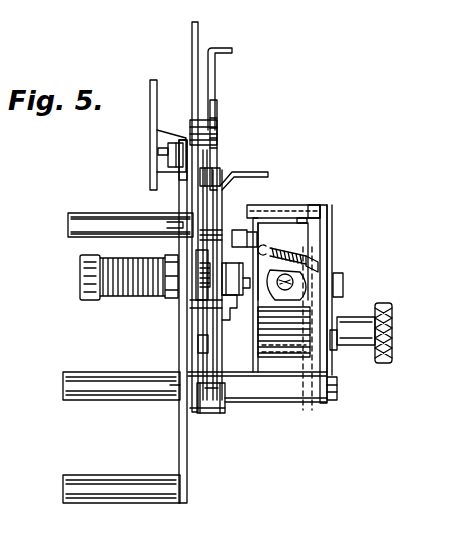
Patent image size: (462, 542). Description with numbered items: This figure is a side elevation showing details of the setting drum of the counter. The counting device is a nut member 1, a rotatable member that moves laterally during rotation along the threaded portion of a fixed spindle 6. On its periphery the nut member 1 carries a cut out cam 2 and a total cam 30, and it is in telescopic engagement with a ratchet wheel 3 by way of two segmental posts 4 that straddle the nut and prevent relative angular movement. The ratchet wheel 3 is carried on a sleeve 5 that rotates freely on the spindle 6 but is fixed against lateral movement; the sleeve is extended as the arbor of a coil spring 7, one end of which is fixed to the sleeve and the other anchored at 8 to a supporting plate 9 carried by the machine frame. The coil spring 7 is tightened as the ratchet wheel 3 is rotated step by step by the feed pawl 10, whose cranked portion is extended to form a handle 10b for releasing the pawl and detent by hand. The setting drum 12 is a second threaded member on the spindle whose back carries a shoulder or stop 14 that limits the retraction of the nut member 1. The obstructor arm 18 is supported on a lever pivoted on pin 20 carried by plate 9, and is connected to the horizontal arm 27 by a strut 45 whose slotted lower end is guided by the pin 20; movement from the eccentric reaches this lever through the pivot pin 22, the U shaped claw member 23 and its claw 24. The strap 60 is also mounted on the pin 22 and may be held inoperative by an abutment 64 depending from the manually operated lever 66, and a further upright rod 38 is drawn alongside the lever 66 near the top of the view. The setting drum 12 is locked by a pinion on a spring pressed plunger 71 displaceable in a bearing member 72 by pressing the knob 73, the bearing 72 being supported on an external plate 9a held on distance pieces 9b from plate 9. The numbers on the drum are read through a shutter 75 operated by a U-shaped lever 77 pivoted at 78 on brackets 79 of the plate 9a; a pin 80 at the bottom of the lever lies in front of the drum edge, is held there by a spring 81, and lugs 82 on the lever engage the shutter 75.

The nut member 1 is at (267, 249).
The cut out cam 2 is at (233, 322).
The ratchet wheel 3 is at (205, 275).
The posts 4 is at (240, 280).
The sleeve 5 is at (80, 268).
The fixed spindle 6 is at (248, 298).
The coil spring 7 is at (103, 300).
The anchor 8 is at (158, 254).
The supporting plate 9 is at (184, 430).
The external plate 9a is at (338, 394).
The distance pieces 9b is at (284, 392).
The feed pawl 10 is at (218, 180).
The handle 10b is at (262, 172).
The setting drum 12 is at (260, 340).
The shoulder or stop 14 is at (255, 218).
The obstructor arm 18 is at (217, 115).
The pin 20 is at (206, 406).
The pivot pin 22 is at (170, 152).
The U shaped claw member 23 is at (156, 128).
The claw 24 is at (151, 104).
The horizontal arm 27 is at (200, 345).
The total cam 30 is at (237, 232).
The rod 38 is at (212, 80).
The strut 45 is at (210, 382).
The strap 60 is at (180, 173).
The abutment 64 is at (172, 205).
The manually operated lever 66 is at (190, 40).
The spring pressed plunger 71 is at (337, 346).
The bearing member 72 is at (345, 316).
The knob 73 is at (392, 305).
The shutter 75 is at (312, 216).
The U-shaped lever 77 is at (295, 237).
The pivot 78 is at (293, 282).
The ears or brackets 79 is at (343, 291).
The pin 80 is at (310, 395).
The spring 81 is at (312, 262).
The lugs 82 is at (292, 209).